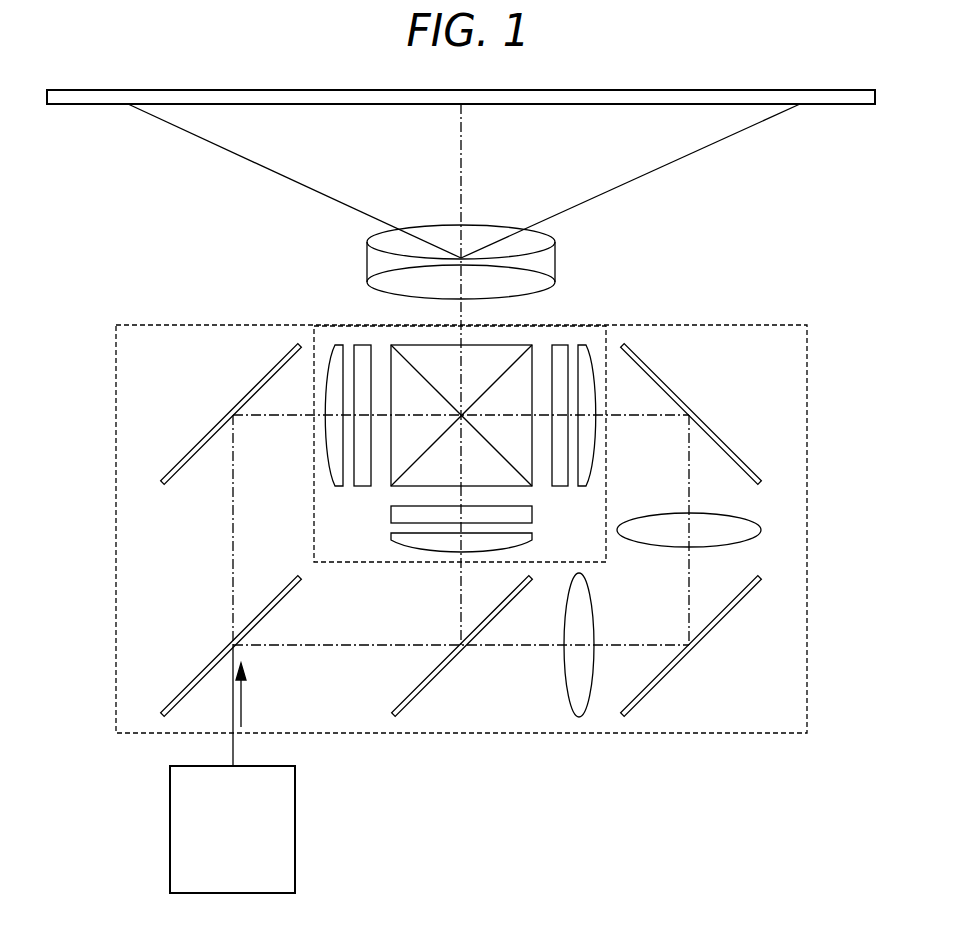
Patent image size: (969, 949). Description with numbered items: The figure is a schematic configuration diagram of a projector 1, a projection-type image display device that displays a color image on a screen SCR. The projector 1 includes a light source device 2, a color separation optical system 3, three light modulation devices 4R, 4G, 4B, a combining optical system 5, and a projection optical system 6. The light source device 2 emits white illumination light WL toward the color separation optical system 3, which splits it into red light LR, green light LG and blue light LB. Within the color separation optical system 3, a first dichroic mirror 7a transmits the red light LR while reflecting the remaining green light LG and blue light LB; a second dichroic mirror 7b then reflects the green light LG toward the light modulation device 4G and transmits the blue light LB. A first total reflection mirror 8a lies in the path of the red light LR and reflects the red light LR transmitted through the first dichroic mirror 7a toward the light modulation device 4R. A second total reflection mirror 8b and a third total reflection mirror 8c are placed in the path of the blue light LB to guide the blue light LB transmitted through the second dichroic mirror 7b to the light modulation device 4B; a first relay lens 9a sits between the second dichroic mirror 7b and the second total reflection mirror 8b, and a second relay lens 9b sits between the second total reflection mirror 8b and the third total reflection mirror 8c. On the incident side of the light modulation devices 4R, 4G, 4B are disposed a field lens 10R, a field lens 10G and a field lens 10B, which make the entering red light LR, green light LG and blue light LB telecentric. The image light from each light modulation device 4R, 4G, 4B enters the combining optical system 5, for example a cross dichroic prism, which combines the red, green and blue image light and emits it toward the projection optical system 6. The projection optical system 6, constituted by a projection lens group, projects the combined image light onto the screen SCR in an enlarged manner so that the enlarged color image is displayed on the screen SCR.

The screen SCR is at (840, 105).
The projector 1 is at (818, 292).
The light source device 2 is at (296, 862).
The color separation optical system 3 is at (116, 473).
The light modulation device 4R is at (362, 343).
The light modulation device 4G is at (398, 515).
The light modulation device 4B is at (560, 343).
The combining optical system 5 is at (483, 355).
The projection optical system 6 is at (441, 238).
The first dichroic mirror 7a is at (195, 675).
The second dichroic mirror 7b is at (440, 680).
The first total reflection mirror 8a is at (207, 432).
The second total reflection mirror 8b is at (715, 628).
The third total reflection mirror 8c is at (720, 433).
The first relay lens 9a is at (563, 667).
The second relay lens 9b is at (750, 520).
The field lens 10R is at (338, 343).
The field lens 10G is at (397, 538).
The field lens 10B is at (580, 343).
The red light LR is at (233, 553).
The green light LG is at (461, 600).
The blue light LB is at (689, 595).
The illumination light WL is at (242, 712).